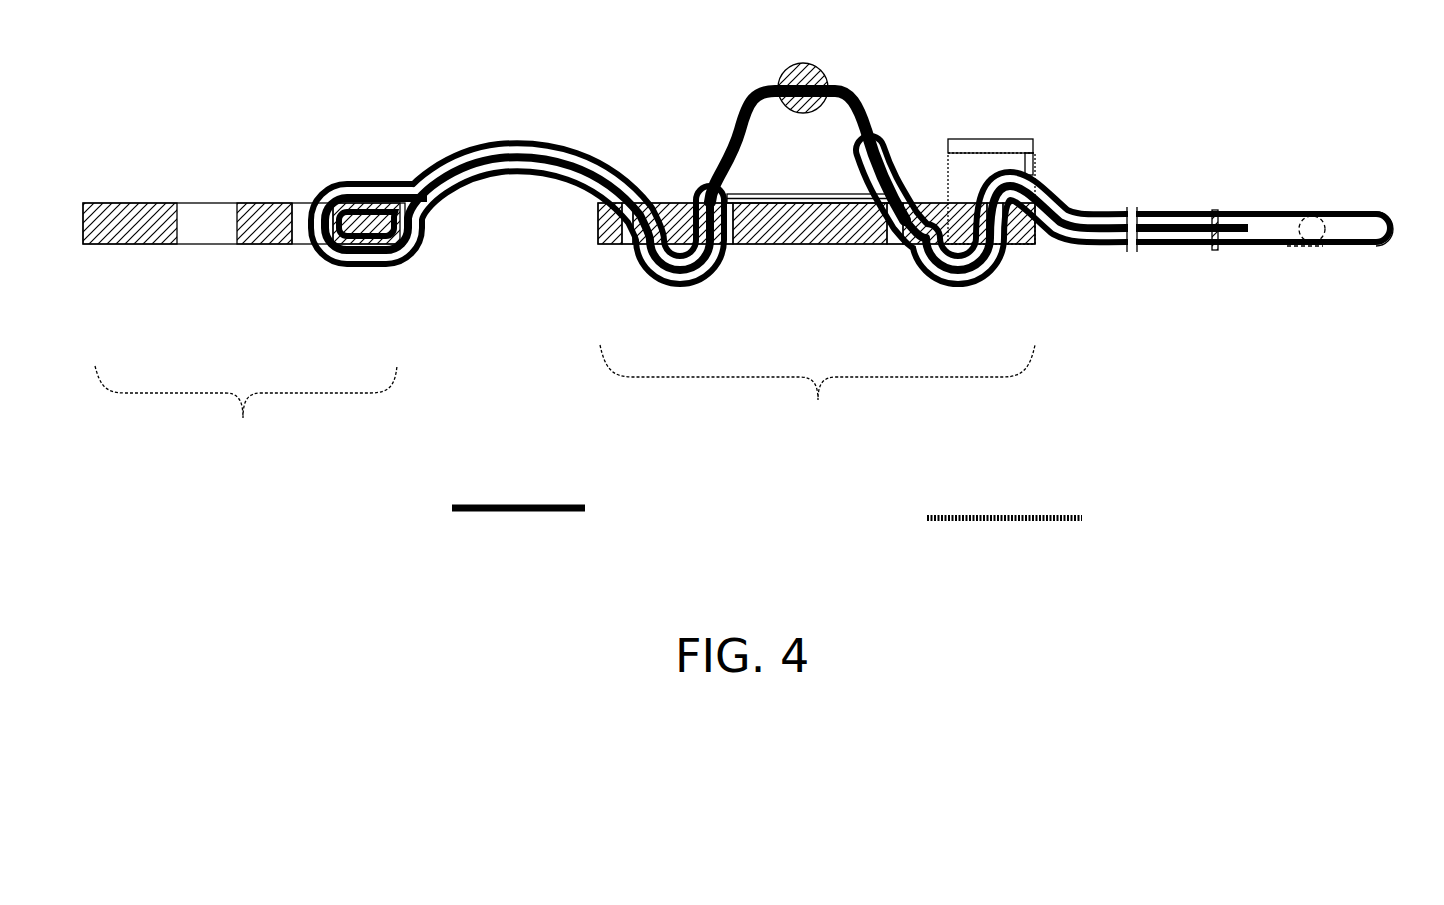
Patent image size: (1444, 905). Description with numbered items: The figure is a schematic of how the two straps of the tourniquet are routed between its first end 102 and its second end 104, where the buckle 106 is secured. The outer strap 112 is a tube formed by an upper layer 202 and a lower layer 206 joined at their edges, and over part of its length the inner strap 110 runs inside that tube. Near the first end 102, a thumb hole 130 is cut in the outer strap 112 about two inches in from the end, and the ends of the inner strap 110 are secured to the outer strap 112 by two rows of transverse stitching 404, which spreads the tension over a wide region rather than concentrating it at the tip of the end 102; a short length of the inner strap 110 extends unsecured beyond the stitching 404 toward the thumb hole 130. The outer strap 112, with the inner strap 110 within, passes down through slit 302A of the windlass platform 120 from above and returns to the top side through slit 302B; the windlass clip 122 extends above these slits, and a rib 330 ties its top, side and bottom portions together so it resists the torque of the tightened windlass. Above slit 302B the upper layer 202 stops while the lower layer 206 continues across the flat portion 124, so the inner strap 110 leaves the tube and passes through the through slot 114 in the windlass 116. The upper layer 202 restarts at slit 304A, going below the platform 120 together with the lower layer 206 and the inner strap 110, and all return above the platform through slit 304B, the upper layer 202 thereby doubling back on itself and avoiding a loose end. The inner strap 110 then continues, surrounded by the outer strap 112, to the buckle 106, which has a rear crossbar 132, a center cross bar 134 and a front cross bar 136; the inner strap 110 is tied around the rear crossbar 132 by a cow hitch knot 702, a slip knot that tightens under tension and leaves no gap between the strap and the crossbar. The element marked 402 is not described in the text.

The first end 102 is at (1405, 235).
The second end 104 is at (119, 198).
The buckle 106 is at (246, 414).
The inner strap 110 is at (844, 347).
The outer strap 112 is at (1247, 250).
The through slot 114 is at (796, 82).
The windlass 116 is at (807, 64).
The windlass platform 120 is at (817, 396).
The windlass clip 122 is at (985, 138).
The flat portion 124 is at (851, 237).
The thumb hole 130 is at (1312, 246).
The rear crossbar 132 is at (366, 246).
The center cross bar 134 is at (265, 245).
The front cross bar 136 is at (132, 245).
The upper layer 202 is at (545, 138).
The lower layer 206 is at (748, 194).
The slit 302A is at (999, 246).
The slit 302B is at (893, 247).
The slit 304A is at (697, 205).
The slit 304B is at (622, 246).
The rib 330 is at (1040, 165).
The outer strap end 402 is at (304, 203).
The stitching 404 is at (505, 138).
The knot 702 is at (406, 200).